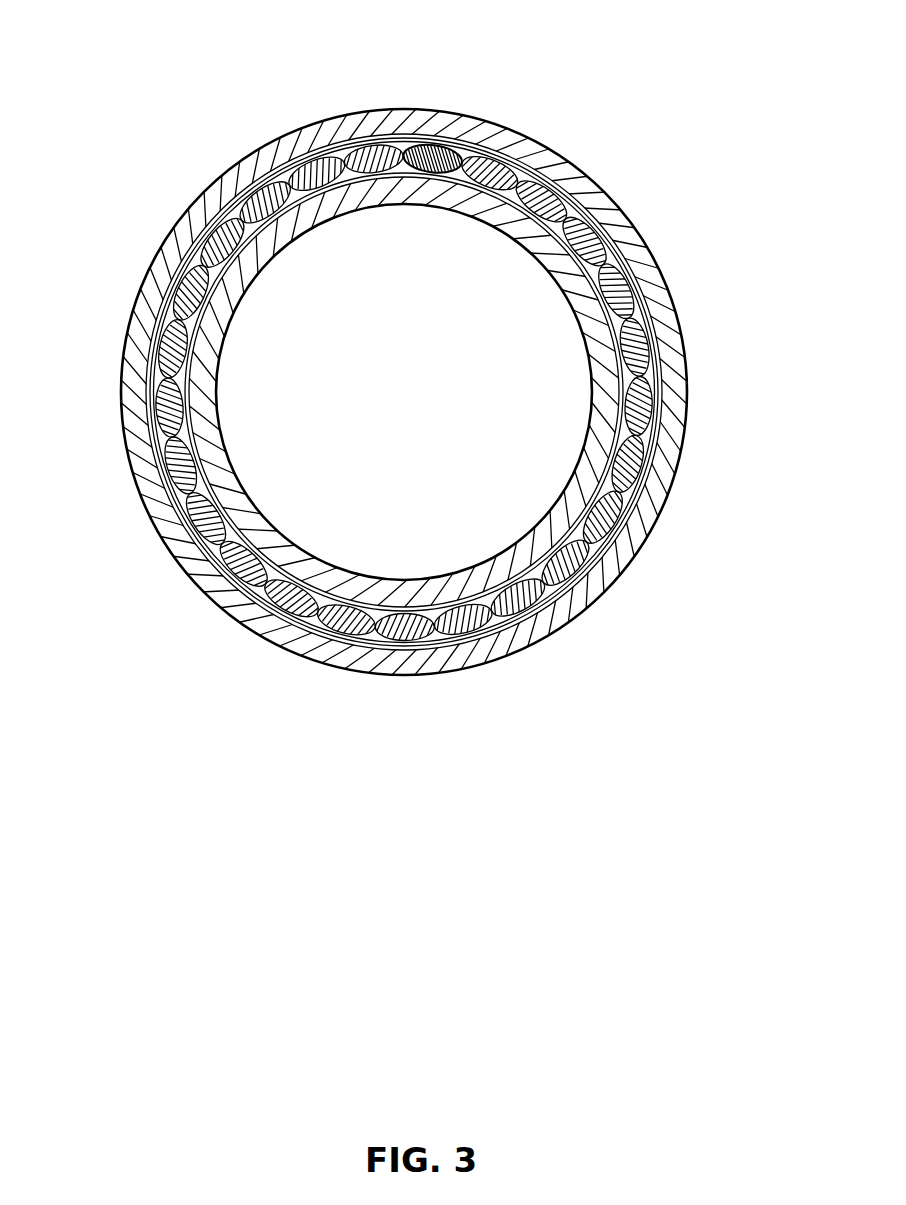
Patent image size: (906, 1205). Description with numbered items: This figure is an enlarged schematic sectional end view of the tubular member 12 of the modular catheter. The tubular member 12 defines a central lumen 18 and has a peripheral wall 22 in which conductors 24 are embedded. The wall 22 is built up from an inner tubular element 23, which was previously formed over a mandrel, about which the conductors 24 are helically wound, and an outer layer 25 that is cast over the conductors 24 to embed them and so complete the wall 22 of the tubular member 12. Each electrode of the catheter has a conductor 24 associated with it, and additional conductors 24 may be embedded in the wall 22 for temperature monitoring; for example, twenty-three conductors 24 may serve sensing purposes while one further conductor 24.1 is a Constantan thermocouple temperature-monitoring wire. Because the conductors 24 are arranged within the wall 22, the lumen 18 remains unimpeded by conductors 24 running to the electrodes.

The tubular member 12 is at (638, 105).
The central lumen 18 is at (404, 392).
The peripheral wall 22 is at (621, 211).
The inner tubular element 23 is at (594, 321).
The conductors 24 is at (252, 196).
The further conductor 24.1 is at (438, 147).
The outer layer 25 is at (678, 382).